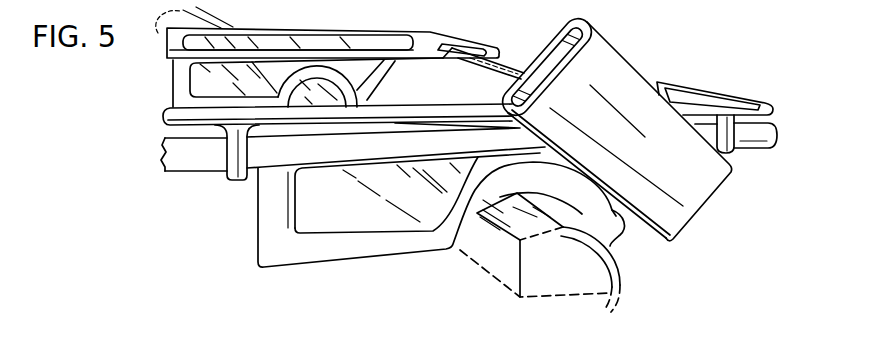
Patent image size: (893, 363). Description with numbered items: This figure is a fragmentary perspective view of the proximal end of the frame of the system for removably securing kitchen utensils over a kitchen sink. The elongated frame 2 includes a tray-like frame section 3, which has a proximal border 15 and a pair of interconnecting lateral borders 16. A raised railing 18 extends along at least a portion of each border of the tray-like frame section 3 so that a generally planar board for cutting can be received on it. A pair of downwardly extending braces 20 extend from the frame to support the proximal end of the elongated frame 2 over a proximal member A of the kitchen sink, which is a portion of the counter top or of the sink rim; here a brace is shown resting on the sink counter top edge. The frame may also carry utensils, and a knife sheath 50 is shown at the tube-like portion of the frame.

The elongated frame 2 is at (192, 175).
The tray-like frame section 3 is at (523, 63).
The proximal border 15 is at (589, 24).
The lateral borders 16 is at (172, 71).
The raised railing 18 is at (483, 40).
The downwardly extending braces 20 is at (259, 255).
The knife sheath 50 is at (692, 228).
The proximal member of the kitchen sink A is at (629, 284).